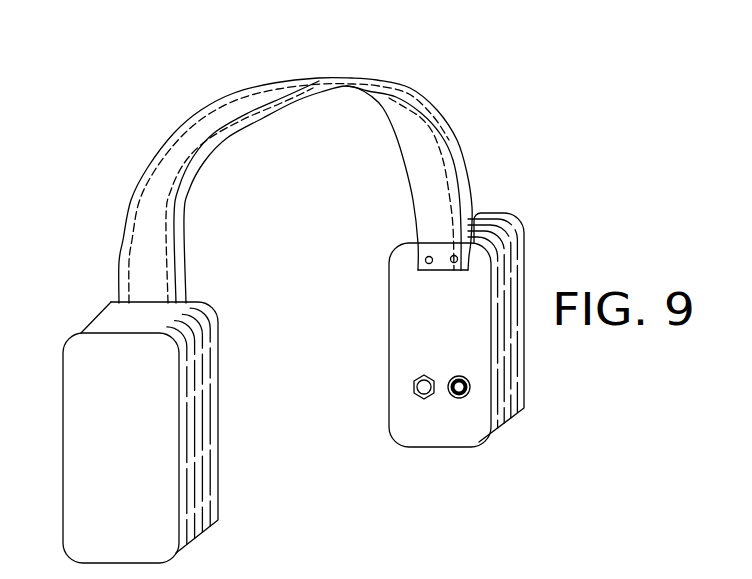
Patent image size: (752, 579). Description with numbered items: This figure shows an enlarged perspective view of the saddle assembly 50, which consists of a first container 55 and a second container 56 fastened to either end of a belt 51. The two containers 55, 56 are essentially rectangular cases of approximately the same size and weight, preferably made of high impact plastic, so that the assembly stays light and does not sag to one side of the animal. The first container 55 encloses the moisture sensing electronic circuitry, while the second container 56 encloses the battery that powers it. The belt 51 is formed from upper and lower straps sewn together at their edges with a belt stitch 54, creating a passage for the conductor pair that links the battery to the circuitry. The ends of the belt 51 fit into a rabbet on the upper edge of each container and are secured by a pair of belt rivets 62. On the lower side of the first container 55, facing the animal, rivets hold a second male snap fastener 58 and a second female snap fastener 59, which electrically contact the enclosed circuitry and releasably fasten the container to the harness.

The saddle assembly 50 is at (351, 295).
The belt 51 is at (296, 165).
The belt stitch 54 is at (236, 193).
The first container 55 is at (536, 330).
The second container 56 is at (201, 430).
The second male snap fastener 58 is at (522, 436).
The second female snap fastener 59 is at (491, 456).
The belt rivets 62 is at (389, 213).